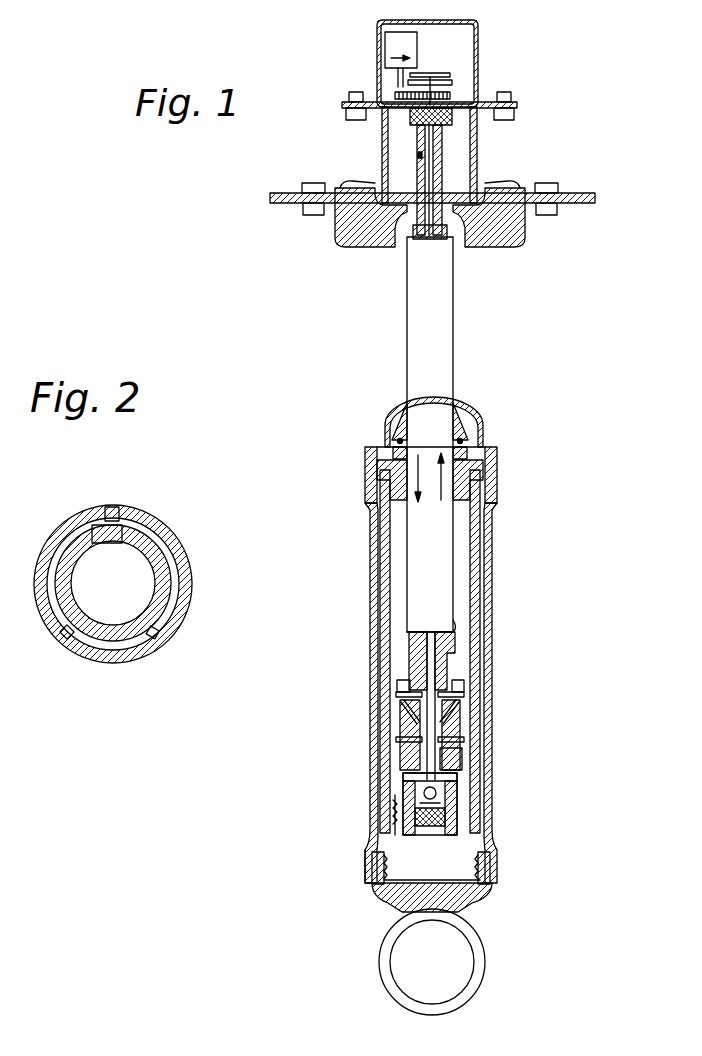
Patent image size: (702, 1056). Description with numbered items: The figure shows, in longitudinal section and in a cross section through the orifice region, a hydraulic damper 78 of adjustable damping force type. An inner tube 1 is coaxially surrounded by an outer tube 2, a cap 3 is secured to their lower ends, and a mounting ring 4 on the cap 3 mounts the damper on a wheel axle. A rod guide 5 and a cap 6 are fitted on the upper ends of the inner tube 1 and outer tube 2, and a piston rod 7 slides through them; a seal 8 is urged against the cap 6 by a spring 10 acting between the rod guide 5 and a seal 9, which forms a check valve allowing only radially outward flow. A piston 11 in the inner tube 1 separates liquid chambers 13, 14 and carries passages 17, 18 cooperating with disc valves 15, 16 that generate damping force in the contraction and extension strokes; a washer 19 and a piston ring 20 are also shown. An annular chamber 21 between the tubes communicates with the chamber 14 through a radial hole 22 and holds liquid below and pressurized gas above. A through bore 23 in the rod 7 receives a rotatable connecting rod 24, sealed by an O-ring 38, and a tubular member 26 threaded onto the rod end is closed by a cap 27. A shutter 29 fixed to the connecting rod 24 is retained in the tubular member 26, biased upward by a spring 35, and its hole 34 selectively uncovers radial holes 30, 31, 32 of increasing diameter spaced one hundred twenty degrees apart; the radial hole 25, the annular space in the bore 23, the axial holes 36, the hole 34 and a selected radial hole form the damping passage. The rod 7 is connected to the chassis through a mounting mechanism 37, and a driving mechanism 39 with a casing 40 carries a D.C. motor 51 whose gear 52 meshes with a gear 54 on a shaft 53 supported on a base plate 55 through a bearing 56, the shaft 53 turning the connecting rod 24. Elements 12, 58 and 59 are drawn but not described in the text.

In FIG. 1, the inner tube 1 is at (371, 526).
In FIG. 1, the outer tube 2 is at (381, 556).
In FIG. 1, the cap 3 is at (371, 893).
In FIG. 1, the mounting ring 4 is at (385, 940).
In FIG. 1, the rod guide 5 is at (481, 432).
In FIG. 1, the cap 6 is at (458, 403).
In FIG. 1, the piston rod 7 is at (453, 308).
In FIG. 1, the seal 8 is at (400, 408).
In FIG. 1, the seal 9 is at (394, 422).
In FIG. 1, the spring 10 is at (390, 445).
In FIG. 1, the piston 11 is at (390, 712).
In FIG. 1, the upper working chamber 12 is at (400, 591).
In FIG. 1, the liquid chamber 13 is at (464, 572).
In FIG. 1, the liquid chamber 14 is at (474, 888).
In FIG. 1, the disc valve 15 is at (478, 672).
In FIG. 1, the disc valve 16 is at (398, 730).
In FIG. 1, the passage 17 is at (466, 726).
In FIG. 1, the passage 18 is at (395, 690).
In FIG. 1, the washer 19 is at (400, 668).
In FIG. 1, the piston ring 20 is at (462, 700).
In FIG. 1, the annular chamber 21 is at (490, 526).
In FIG. 1, the radial hole 22 is at (495, 870).
In FIG. 1, the through bore 23 is at (415, 645).
In FIG. 1, the connecting rod 24 is at (445, 630).
In FIG. 1, the radial hole 25 is at (460, 652).
In FIG. 1, the tubular member 26 is at (406, 757).
In FIG. 2, the tubular member 26 is at (106, 662).
In FIG. 1, the cap 27 is at (428, 835).
In FIG. 1, the shutter 29 is at (457, 791).
In FIG. 2, the shutter 29 is at (152, 560).
In FIG. 2, the radial hole 30 is at (140, 516).
In FIG. 1, the radial hole 31 is at (457, 793).
In FIG. 2, the radial hole 31 is at (157, 640).
In FIG. 2, the radial hole 32 is at (66, 640).
In FIG. 2, the hole 34 is at (101, 515).
In FIG. 1, the spring 35 is at (401, 786).
In FIG. 1, the axial holes 36 is at (462, 760).
In FIG. 1, the mounting mechanism 37 is at (395, 241).
In FIG. 1, the O-ring 38 is at (416, 157).
In FIG. 1, the driving mechanism 39 is at (377, 64).
In FIG. 1, the casing 40 is at (380, 52).
In FIG. 1, the D.C. motor 51 is at (388, 37).
In FIG. 1, the gear 52 is at (394, 95).
In FIG. 1, the shaft 53 is at (438, 118).
In FIG. 1, the gear 54 is at (452, 95).
In FIG. 1, the base plate 55 is at (384, 122).
In FIG. 1, the bearing 56 is at (498, 105).
In FIG. 1, the lever plate 58 is at (455, 82).
In FIG. 1, the pinion shaft 59 is at (448, 73).
In FIG. 1, the hydraulic damper 78 is at (528, 420).